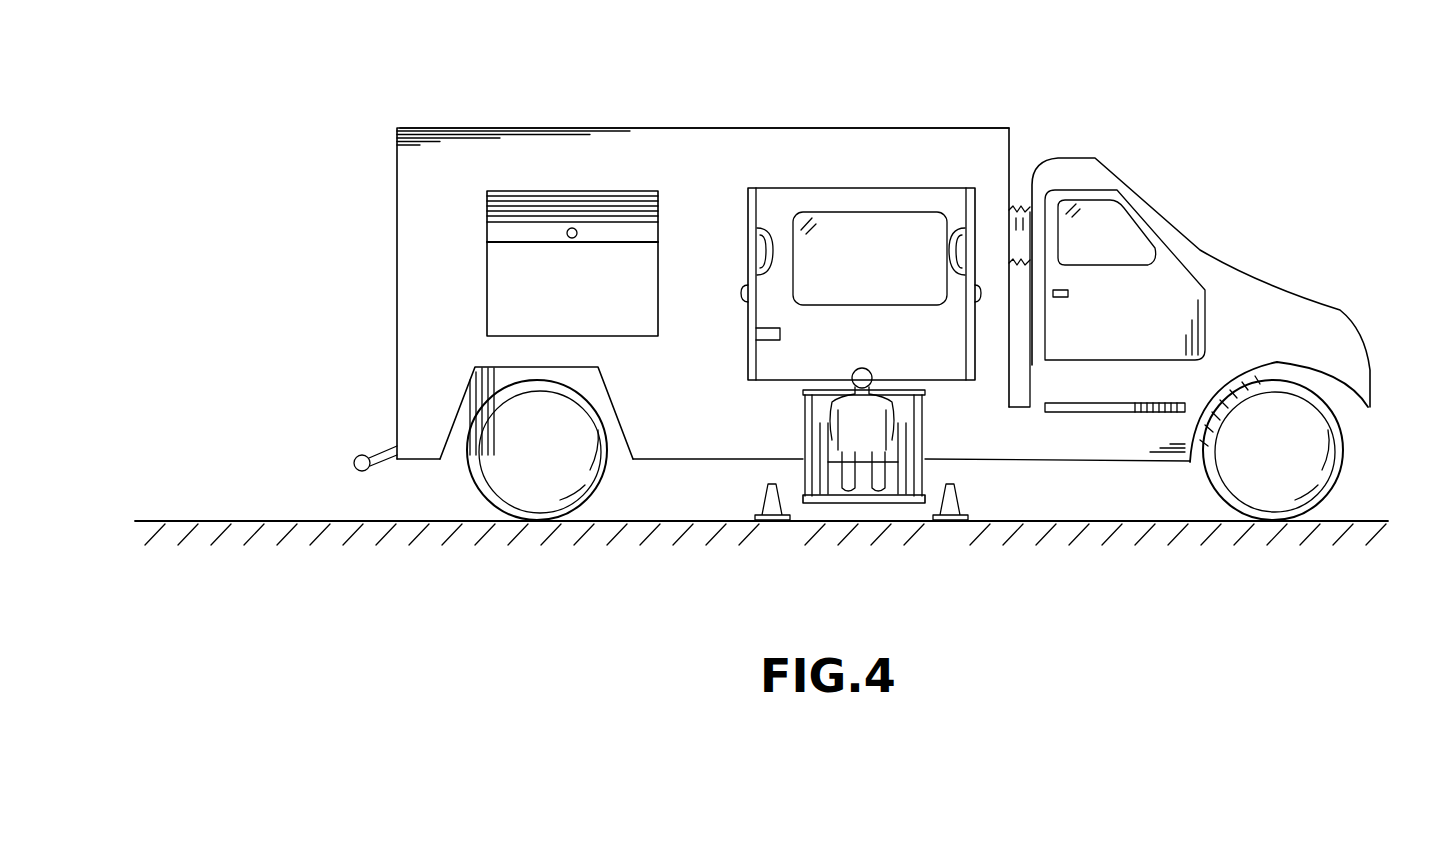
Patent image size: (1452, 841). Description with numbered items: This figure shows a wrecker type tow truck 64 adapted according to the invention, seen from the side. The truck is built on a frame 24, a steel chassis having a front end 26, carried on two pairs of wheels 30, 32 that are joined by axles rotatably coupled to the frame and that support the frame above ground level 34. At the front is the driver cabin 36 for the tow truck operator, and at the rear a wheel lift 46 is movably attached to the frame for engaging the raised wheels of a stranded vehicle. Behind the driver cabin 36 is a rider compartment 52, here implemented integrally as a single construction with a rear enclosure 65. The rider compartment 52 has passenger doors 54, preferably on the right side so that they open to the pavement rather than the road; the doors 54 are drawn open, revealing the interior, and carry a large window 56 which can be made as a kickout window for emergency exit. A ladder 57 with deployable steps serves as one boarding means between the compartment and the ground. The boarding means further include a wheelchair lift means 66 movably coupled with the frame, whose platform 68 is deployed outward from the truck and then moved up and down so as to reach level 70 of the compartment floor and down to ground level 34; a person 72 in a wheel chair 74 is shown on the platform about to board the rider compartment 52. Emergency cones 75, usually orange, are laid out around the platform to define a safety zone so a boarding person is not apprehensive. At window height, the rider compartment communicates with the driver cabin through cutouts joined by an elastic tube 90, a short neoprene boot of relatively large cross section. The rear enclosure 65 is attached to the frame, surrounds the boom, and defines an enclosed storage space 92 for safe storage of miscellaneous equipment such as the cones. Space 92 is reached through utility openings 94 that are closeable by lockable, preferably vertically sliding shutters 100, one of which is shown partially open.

The frame 24 is at (1073, 445).
The front end 26 is at (1385, 375).
The wheels 30 is at (505, 480).
The wheels 32 is at (1283, 490).
The ground level 34 is at (1362, 518).
The driver cabin 36 is at (1148, 206).
The wheel lift 46 is at (358, 455).
The rider compartment 52 is at (844, 233).
The passenger doors 54 is at (752, 207).
The window 56 is at (888, 275).
The ladder 57 is at (940, 432).
The tow truck 64 is at (724, 82).
The rear enclosure 65 is at (548, 160).
The wheelchair lift means 66 is at (807, 458).
The platform 68 is at (858, 504).
The level 70 is at (778, 372).
The person 72 is at (870, 405).
The wheel chair 74 is at (854, 418).
The emergency cones 75 is at (768, 498).
The elastic tube 90 is at (1018, 265).
The enclosed storage space 92 is at (539, 250).
The utility openings 94 is at (488, 322).
The shutters 100 is at (497, 214).